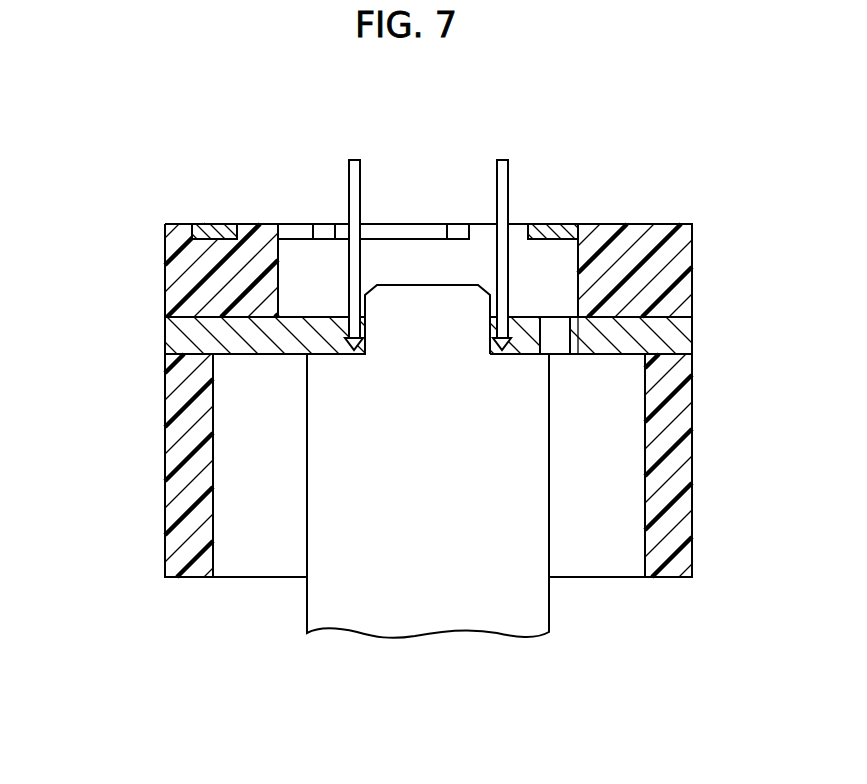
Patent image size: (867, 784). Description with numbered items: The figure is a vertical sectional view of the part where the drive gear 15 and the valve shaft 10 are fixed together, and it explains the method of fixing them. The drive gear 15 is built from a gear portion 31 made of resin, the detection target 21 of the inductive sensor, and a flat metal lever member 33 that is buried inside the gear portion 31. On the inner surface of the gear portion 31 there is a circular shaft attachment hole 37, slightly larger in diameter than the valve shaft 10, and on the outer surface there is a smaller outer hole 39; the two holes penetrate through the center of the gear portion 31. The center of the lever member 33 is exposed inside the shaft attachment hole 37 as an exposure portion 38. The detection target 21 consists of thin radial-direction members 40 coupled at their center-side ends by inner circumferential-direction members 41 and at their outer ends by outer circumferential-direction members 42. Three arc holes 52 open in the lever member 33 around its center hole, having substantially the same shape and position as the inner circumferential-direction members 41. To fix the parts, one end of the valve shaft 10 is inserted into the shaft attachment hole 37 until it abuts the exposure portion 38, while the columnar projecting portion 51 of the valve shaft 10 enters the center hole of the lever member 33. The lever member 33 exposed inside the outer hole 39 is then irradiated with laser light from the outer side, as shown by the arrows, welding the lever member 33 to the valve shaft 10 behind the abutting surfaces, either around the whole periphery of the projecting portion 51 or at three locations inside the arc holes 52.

The valve shaft 10 is at (520, 600).
The drive gear 15 is at (141, 224).
The detection target 21 is at (228, 224).
The gear portion 31 is at (184, 425).
The lever member 33 is at (185, 337).
The shaft attachment hole 37 is at (267, 548).
The exposure portion 38 is at (278, 356).
The outer hole 39 is at (527, 258).
The radial-direction members 40 is at (296, 224).
The inner circumferential-direction members 41 is at (388, 224).
The outer circumferential-direction members 42 is at (208, 224).
The projecting portion 51 is at (433, 285).
The arc holes 52 is at (558, 355).